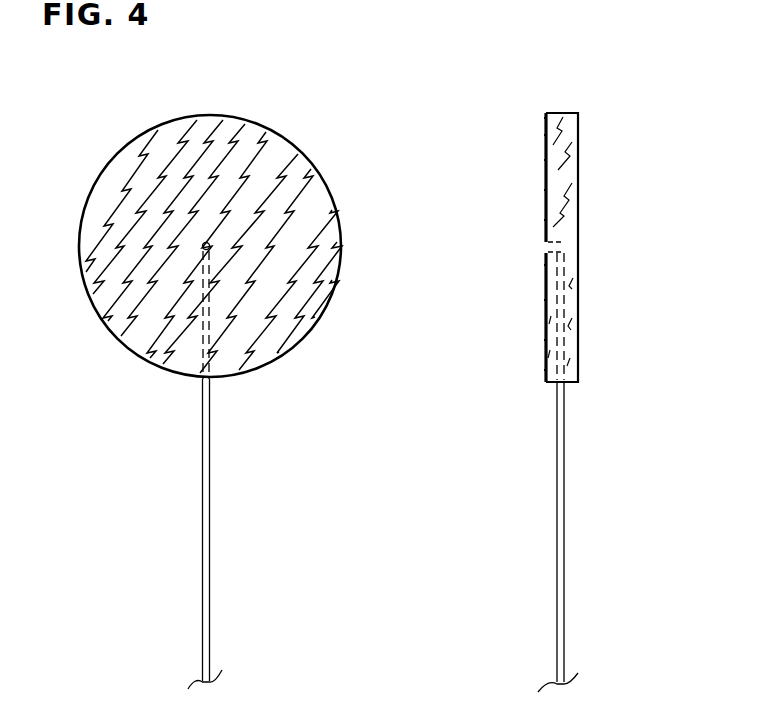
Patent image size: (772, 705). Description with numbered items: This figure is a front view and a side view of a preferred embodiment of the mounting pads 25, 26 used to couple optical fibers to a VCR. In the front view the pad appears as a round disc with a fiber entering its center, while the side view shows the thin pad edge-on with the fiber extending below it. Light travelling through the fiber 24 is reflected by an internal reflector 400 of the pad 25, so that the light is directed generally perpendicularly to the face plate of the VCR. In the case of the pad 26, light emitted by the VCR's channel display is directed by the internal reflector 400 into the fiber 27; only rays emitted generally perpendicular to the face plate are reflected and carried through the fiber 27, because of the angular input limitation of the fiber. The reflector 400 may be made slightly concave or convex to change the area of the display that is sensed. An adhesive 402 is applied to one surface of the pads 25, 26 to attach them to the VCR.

The fiber 24 is at (452, 471).
The fiber 27 is at (208, 507).
The mounting pad 25 is at (399, 247).
The mounting pad 26 is at (340, 275).
The internal reflector 400 is at (206, 247).
The adhesive 402 is at (544, 125).